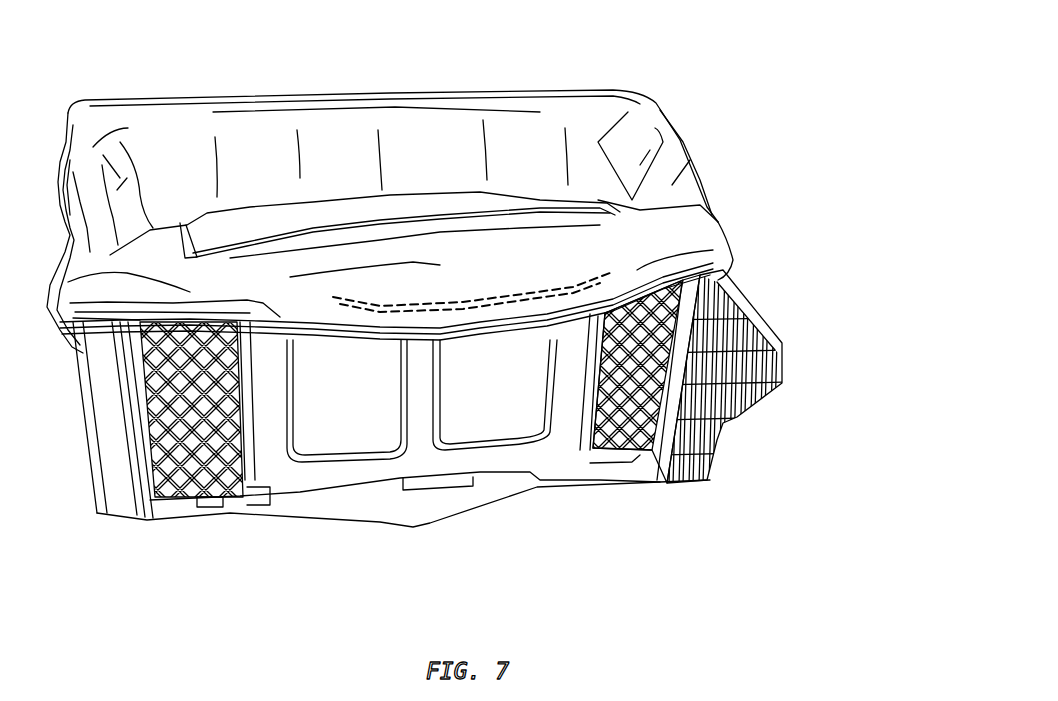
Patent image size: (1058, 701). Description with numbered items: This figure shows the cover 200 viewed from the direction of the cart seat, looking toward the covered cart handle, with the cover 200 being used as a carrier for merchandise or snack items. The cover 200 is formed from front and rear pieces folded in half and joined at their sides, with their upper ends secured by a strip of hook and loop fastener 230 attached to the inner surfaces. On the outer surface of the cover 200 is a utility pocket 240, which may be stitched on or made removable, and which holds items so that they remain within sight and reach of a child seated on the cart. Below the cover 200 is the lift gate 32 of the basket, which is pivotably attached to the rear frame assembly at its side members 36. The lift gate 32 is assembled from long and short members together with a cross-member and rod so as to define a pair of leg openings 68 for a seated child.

The cover 200 is at (160, 120).
The utility pocket 240 is at (538, 203).
The hook and loop fastener 230 is at (557, 292).
The side members 36 is at (113, 420).
The lift gate 32 is at (190, 500).
The leg openings 68 is at (422, 401).